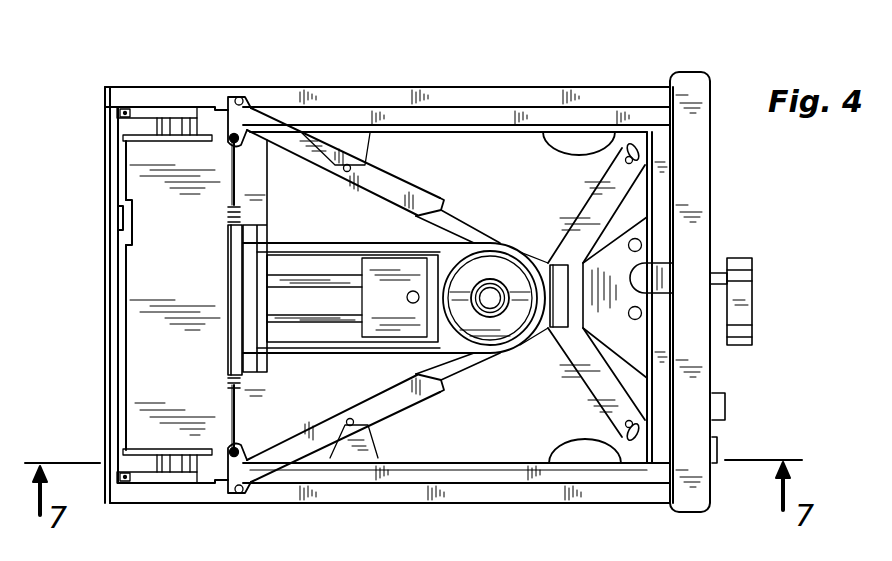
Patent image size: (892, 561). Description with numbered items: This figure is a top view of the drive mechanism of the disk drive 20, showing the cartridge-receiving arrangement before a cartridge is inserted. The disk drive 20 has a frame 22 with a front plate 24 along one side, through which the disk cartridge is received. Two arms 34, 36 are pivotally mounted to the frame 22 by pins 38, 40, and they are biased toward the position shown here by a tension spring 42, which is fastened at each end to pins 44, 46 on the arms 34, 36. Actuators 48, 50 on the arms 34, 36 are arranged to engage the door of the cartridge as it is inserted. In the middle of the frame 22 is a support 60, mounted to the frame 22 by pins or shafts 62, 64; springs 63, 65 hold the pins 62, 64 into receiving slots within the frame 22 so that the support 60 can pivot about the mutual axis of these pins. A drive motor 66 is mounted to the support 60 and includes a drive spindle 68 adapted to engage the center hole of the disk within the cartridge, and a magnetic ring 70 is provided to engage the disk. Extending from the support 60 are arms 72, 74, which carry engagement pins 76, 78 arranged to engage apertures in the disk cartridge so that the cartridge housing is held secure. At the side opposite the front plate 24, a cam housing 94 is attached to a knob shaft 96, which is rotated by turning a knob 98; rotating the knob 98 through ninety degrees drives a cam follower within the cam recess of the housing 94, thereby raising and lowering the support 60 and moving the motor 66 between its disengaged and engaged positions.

The disk drive 20 is at (558, 88).
The frame 22 is at (463, 86).
The front plate 24 is at (708, 136).
The arm 34 is at (378, 407).
The arm 36 is at (352, 185).
The pin 38 is at (238, 496).
The pin 40 is at (242, 96).
The tension spring 42 is at (230, 284).
The pin 44 is at (230, 452).
The pin 46 is at (233, 142).
The actuator 48 is at (428, 398).
The actuator 50 is at (420, 199).
The support 60 is at (458, 218).
The pin 62 is at (178, 123).
The spring 63 is at (158, 108).
The pin 64 is at (182, 486).
The spring 65 is at (153, 486).
The drive motor 66 is at (516, 250).
The drive spindle 68 is at (500, 342).
The magnetic ring 70 is at (487, 268).
The arm 72 is at (550, 382).
The arm 74 is at (552, 204).
The engagement pin 76 is at (620, 428).
The engagement pin 78 is at (622, 149).
The cam housing 94 is at (568, 322).
The knob shaft 96 is at (714, 270).
The knob 98 is at (753, 320).